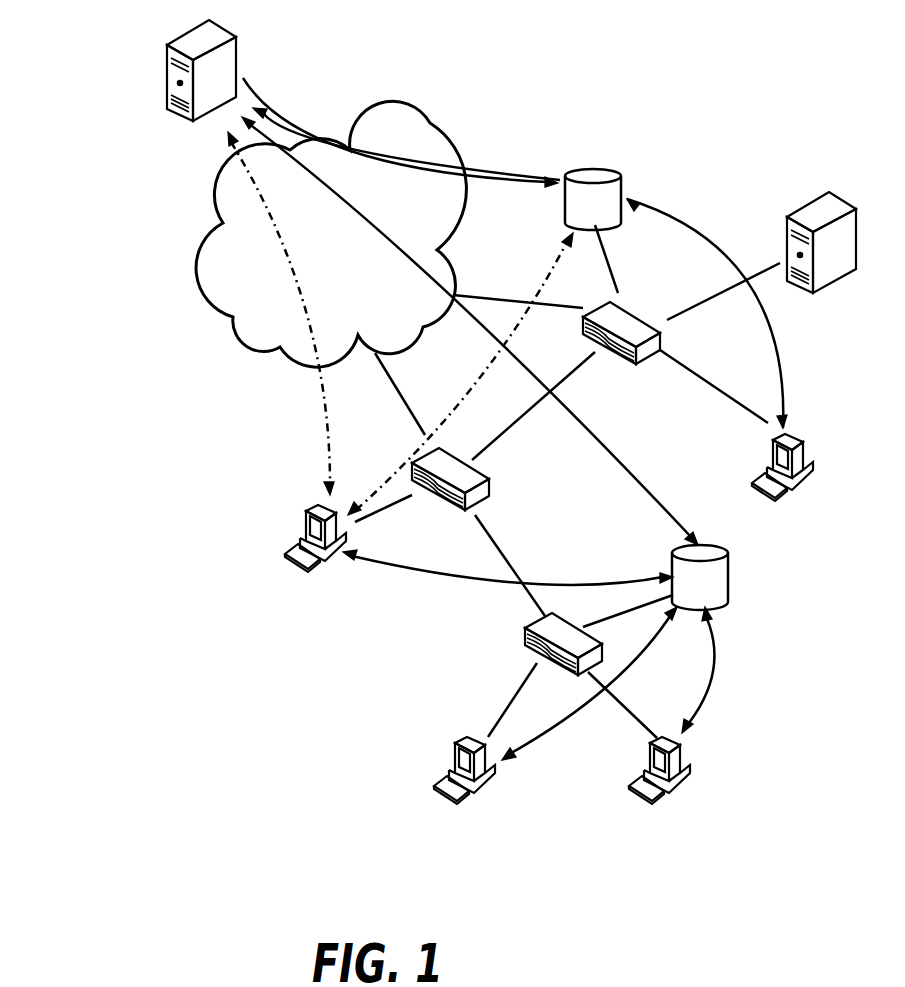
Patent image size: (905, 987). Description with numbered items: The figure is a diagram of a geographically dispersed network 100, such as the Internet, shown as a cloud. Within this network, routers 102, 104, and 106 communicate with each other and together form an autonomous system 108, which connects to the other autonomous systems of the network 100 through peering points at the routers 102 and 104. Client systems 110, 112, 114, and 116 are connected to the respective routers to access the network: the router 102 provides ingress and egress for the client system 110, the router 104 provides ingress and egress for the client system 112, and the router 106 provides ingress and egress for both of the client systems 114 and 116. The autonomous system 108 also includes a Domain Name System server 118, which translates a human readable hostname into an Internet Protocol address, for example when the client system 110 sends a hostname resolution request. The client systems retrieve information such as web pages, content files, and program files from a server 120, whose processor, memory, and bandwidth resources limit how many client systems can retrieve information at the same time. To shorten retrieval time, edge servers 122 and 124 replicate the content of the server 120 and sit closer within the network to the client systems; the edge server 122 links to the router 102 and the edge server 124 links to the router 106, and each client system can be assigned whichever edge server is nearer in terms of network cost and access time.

The network 100 is at (170, 288).
The router 102 is at (632, 318).
The router 104 is at (462, 505).
The router 106 is at (527, 636).
The autonomous system 108 is at (674, 132).
The client system 110 is at (775, 437).
The client system 112 is at (306, 511).
The client system 114 is at (458, 742).
The client system 116 is at (652, 742).
The Domain Name System server 118 is at (800, 225).
The server 120 is at (185, 50).
The edge server 122 is at (565, 218).
The edge server 124 is at (733, 570).